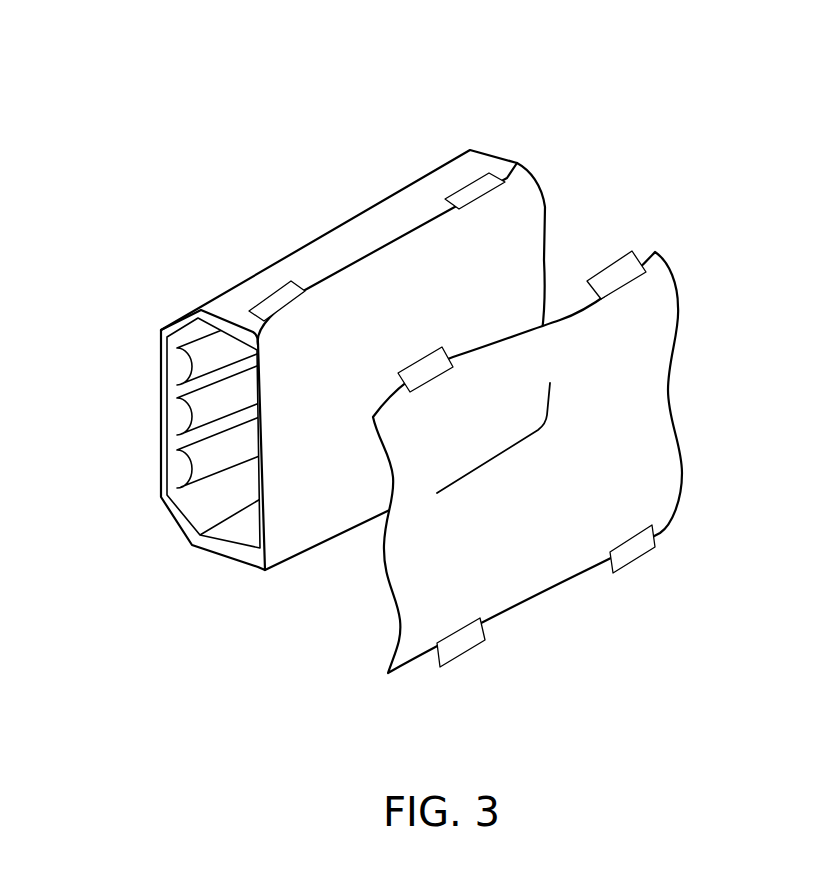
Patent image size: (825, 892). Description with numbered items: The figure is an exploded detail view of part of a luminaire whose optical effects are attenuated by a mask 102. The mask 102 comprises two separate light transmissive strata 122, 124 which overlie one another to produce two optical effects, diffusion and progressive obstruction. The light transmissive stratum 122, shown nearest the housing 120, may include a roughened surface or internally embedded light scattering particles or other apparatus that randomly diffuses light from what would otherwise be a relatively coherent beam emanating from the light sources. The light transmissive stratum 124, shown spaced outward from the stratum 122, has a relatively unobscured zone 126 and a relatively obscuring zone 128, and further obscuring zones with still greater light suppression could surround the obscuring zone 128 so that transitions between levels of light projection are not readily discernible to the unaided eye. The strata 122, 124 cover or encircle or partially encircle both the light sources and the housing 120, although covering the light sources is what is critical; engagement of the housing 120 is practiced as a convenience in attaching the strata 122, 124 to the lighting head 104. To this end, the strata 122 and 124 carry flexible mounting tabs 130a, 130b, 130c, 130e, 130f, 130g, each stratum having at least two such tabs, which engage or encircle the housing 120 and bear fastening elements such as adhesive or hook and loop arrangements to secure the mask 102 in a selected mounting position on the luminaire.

The mask 102 is at (417, 392).
The lighting head 104 is at (330, 345).
The housing 120 is at (158, 450).
The light transmissive stratum 122 is at (513, 243).
The light transmissive stratum 124 is at (536, 444).
The relatively unobscured zone 126 is at (578, 494).
The relatively obscuring zone 128 is at (523, 595).
The flexible mounting tab 130a is at (277, 300).
The flexible mounting tab 130b is at (470, 193).
The flexible mounting tab 130c is at (405, 383).
The flexible mounting tab 130e is at (622, 262).
The flexible mounting tab 130f is at (457, 650).
The flexible mounting tab 130g is at (632, 552).